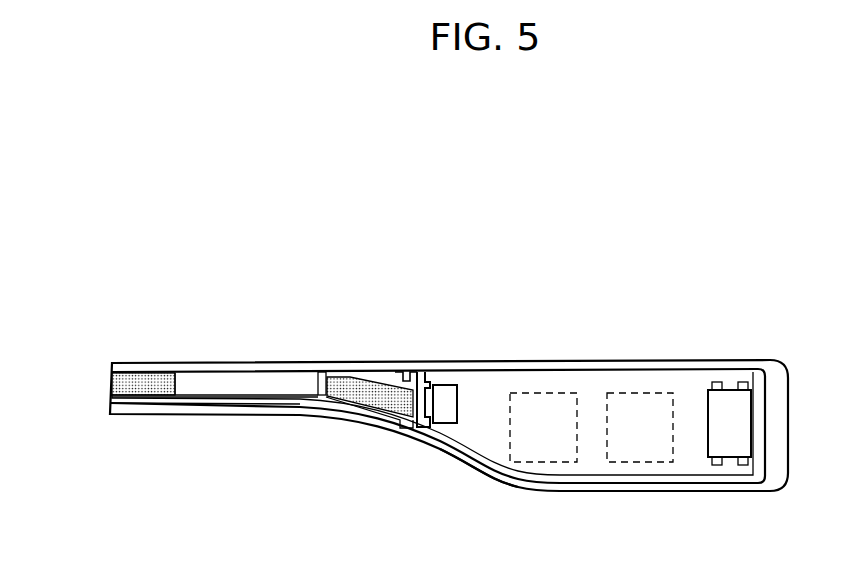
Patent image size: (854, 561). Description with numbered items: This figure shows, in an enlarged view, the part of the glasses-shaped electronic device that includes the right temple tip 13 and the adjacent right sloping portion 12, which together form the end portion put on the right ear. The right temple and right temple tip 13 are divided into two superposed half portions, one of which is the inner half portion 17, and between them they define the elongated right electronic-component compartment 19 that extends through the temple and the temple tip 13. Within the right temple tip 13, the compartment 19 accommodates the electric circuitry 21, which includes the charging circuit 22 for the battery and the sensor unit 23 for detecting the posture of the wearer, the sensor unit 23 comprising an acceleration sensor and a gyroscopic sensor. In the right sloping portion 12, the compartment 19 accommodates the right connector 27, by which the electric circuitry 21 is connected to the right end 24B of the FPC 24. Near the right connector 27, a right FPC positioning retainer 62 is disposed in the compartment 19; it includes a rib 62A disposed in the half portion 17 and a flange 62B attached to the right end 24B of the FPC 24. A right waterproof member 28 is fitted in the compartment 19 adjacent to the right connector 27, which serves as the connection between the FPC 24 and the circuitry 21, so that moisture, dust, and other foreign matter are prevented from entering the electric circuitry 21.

The right sloping portion 12 is at (437, 470).
The right temple tip 13 is at (705, 360).
The inner half portion 17 is at (280, 362).
The right electronic-component compartment 19 is at (262, 396).
The electric circuitry 21 is at (677, 477).
The charging circuit 22 is at (535, 393).
The sensor unit 23 is at (645, 395).
The FPC 24 is at (165, 399).
The right end of the FPC 24B is at (405, 430).
The right connector 27 is at (448, 387).
The right waterproof member 28 is at (218, 385).
The right FPC positioning retainer 62 is at (421, 335).
The rib 62A is at (406, 374).
The flange 62B is at (446, 356).